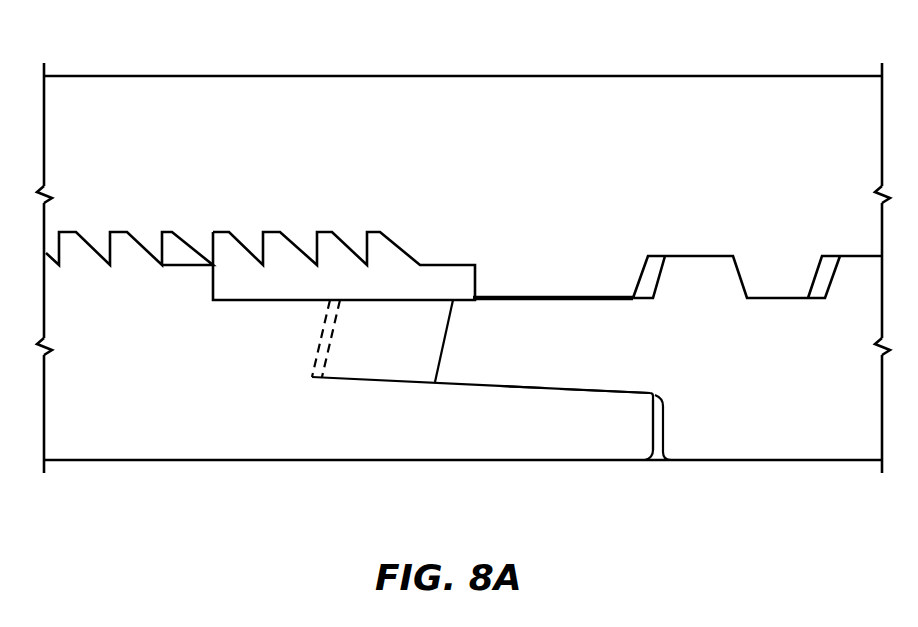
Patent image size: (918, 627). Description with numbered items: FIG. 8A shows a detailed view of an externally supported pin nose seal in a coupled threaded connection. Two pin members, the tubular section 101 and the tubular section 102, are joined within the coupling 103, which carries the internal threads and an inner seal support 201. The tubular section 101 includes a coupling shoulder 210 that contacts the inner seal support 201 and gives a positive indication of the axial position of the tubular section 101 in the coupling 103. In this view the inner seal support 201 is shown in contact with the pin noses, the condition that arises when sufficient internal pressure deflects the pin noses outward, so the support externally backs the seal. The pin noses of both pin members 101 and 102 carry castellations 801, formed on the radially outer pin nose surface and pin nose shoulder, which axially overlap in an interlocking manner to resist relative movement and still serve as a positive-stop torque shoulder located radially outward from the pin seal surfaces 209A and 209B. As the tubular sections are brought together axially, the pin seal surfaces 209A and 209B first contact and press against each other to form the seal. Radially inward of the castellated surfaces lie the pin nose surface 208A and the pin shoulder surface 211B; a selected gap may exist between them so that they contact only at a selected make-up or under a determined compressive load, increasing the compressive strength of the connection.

The coupling 103 is at (228, 77).
The tubular section 101 is at (203, 460).
The tubular section 102 is at (768, 460).
The coupling shoulder 210 is at (218, 283).
The inner seal support 201 is at (523, 296).
The castellations 801 is at (383, 360).
The pin seal surface 209A is at (532, 388).
The pin seal surface 209B is at (562, 397).
The pin shoulder surface 211B is at (653, 436).
The pin nose surface 208A is at (660, 425).